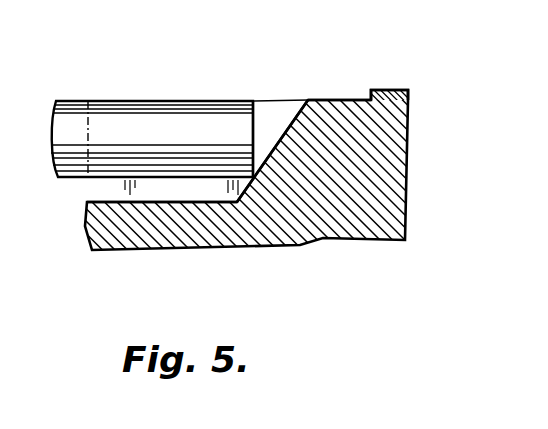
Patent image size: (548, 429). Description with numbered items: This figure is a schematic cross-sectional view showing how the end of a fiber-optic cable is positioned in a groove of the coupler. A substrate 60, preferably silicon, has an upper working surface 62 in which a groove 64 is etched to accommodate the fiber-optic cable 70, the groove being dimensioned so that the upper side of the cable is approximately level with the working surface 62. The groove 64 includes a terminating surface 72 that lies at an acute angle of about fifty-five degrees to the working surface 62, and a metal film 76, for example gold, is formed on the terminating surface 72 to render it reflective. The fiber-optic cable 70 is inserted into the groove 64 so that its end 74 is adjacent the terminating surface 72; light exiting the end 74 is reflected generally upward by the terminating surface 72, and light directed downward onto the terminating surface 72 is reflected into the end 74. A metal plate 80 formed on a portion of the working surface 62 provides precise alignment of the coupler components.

The substrate 60 is at (310, 239).
The working surface 62 is at (328, 100).
The groove 64 is at (105, 196).
The fiber-optic cable 70 is at (70, 112).
The terminating surface 72 is at (288, 100).
The end of fiber-optic cable 74 is at (270, 112).
The metal film 76 is at (285, 130).
The metal plate 80 is at (380, 90).